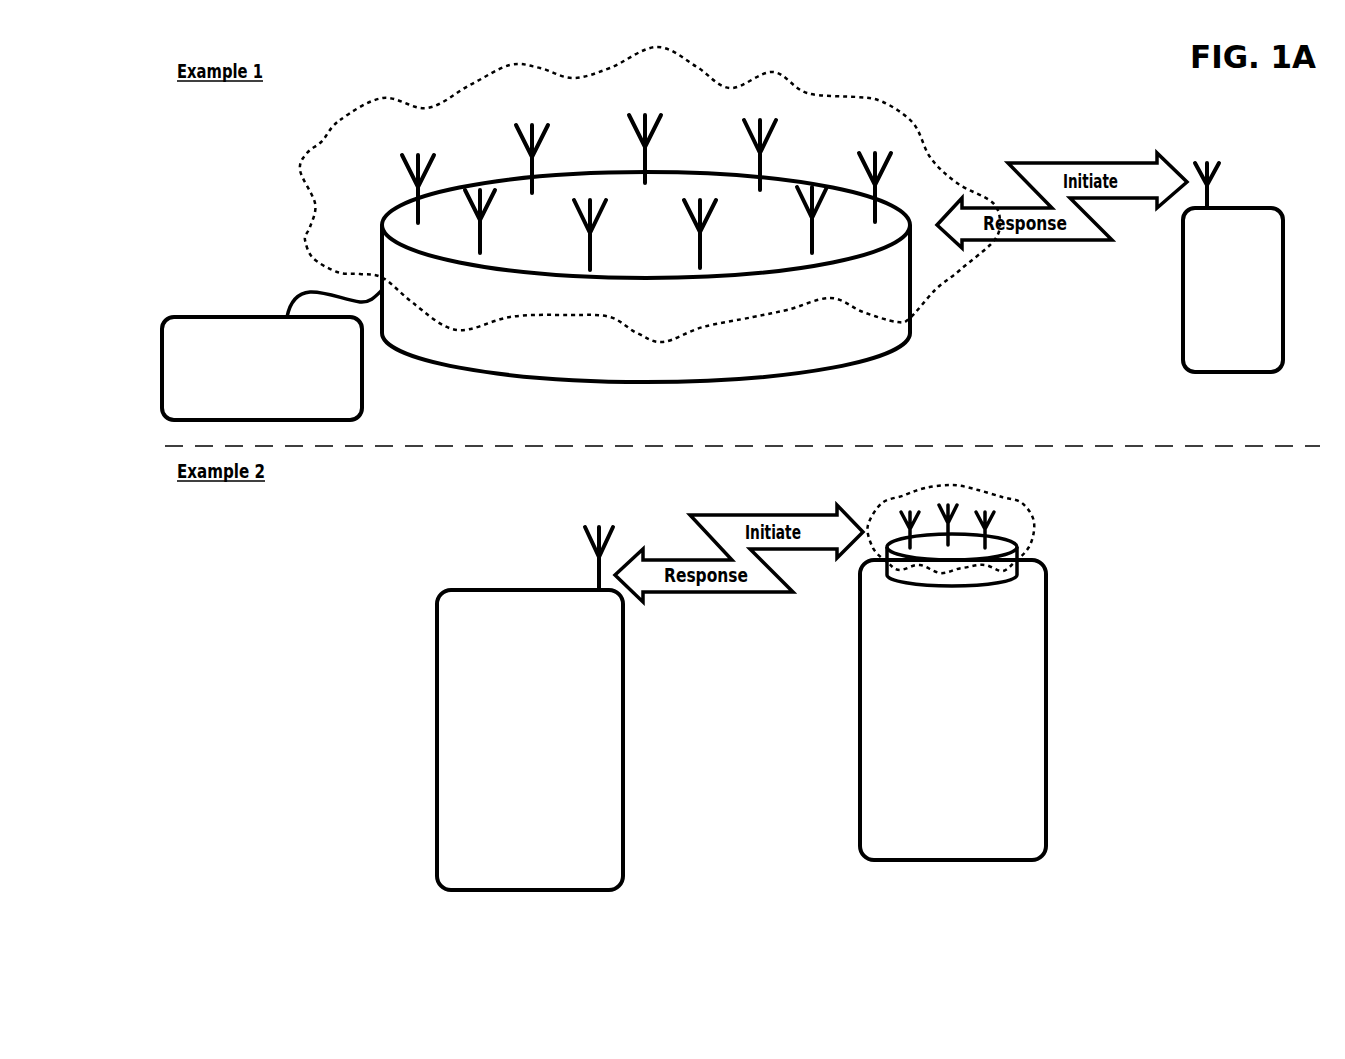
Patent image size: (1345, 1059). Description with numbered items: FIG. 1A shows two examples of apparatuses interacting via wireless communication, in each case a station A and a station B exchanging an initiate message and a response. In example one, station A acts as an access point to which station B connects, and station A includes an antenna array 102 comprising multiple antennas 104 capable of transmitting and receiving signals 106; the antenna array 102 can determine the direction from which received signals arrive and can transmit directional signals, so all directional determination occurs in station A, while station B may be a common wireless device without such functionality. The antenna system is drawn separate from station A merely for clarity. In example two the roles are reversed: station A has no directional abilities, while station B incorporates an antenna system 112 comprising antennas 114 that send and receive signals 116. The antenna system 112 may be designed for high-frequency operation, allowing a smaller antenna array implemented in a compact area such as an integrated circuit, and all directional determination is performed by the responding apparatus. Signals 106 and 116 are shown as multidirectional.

The antenna array 102 is at (646, 297).
The antennas 104 is at (615, 192).
The signals 106 is at (649, 194).
The antenna system 112 is at (942, 584).
The antennas 114 is at (989, 510).
The signals 116 is at (956, 513).